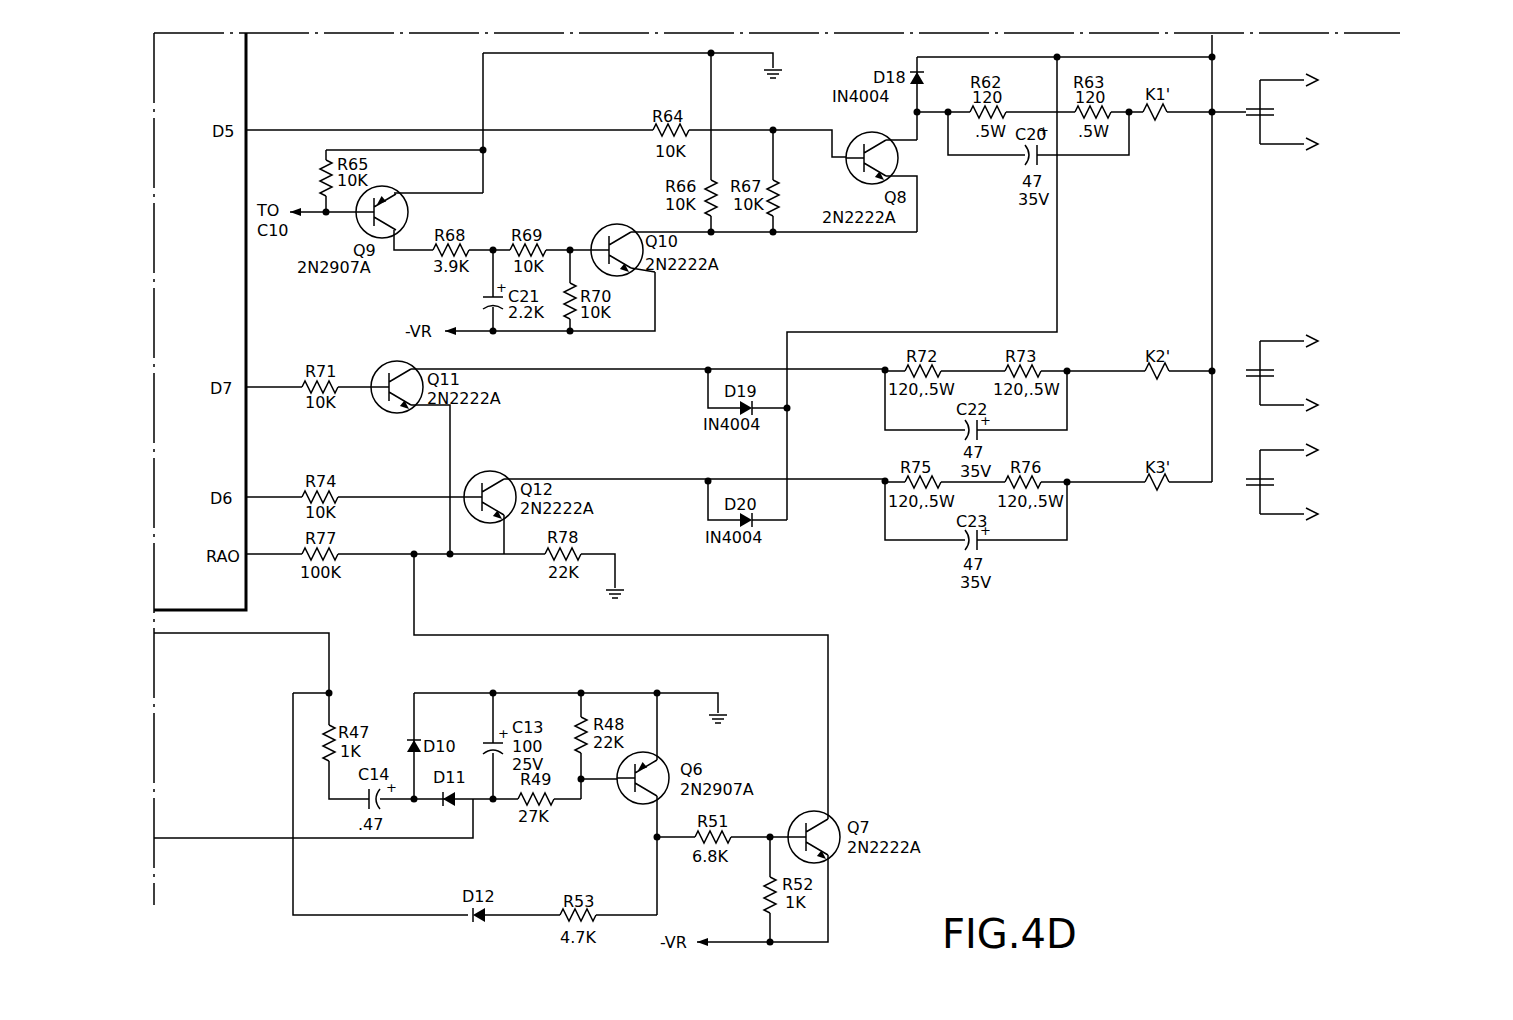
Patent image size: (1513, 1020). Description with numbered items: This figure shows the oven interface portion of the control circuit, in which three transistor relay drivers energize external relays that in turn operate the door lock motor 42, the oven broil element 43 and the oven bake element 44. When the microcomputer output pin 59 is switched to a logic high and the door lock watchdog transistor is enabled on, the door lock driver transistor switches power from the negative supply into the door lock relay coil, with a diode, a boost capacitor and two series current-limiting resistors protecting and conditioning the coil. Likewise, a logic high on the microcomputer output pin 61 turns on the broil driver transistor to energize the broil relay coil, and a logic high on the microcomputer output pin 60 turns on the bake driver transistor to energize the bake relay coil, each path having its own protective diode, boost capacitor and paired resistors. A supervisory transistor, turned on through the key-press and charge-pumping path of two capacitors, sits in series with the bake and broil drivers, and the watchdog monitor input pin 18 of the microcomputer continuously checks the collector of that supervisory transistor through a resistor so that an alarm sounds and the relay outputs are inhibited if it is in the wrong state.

The door lock motor 42 is at (1382, 93).
The oven broil element 43 is at (1366, 355).
The oven bake element 44 is at (1364, 463).
The microcomputer output pin 59 is at (278, 120).
The microcomputer output pin 61 is at (274, 377).
The microcomputer output pin 60 is at (274, 487).
The watchdog monitor input pin 18 is at (274, 544).